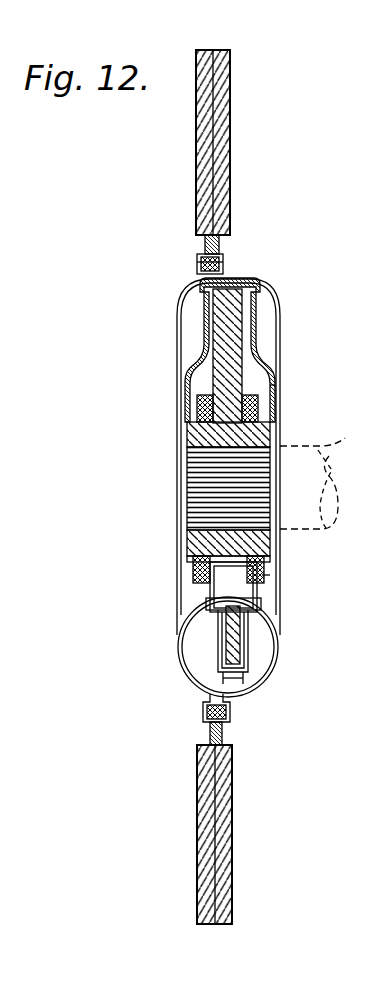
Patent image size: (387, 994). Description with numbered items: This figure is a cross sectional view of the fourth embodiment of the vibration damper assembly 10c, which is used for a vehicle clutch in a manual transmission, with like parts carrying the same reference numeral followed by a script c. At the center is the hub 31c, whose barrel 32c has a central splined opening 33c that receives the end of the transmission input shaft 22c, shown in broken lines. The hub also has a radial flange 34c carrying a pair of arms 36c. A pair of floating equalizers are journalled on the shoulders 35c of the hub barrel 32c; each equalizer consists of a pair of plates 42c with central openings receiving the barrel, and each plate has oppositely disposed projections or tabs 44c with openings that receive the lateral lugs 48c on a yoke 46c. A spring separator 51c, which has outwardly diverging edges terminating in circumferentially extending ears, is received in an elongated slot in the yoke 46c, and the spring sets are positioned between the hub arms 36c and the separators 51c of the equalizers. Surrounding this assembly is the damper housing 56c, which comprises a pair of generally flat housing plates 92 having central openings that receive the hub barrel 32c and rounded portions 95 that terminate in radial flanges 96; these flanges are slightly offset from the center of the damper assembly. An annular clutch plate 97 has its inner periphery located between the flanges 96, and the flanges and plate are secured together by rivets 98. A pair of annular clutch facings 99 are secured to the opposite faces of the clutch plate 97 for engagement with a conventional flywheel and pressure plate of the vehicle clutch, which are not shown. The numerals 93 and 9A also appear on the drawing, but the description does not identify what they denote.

The vibration damper assembly 10c is at (283, 349).
The transmission input shaft 22c is at (312, 471).
The hub 31c is at (185, 416).
The barrel 32c is at (205, 520).
The central splined opening 33c is at (205, 458).
The radial flange 34c is at (192, 590).
The shoulders 35c is at (275, 408).
The arms 36c is at (258, 290).
The plates 42c is at (203, 410).
The projections or tabs 44c is at (195, 634).
The yoke 46c is at (188, 690).
The lateral lugs 48c is at (195, 610).
The spring separator 51c is at (245, 648).
The damper housing 56c is at (178, 678).
The housing plates 92 is at (186, 575).
The connector 93 is at (272, 388).
The rounded portions 95 is at (180, 660).
The radial flanges 96 is at (224, 742).
The annular clutch plate 97 is at (200, 795).
The rivets 98 is at (222, 270).
The annular clutch facings 99 is at (200, 168).
The upper plate 9A is at (190, 435).